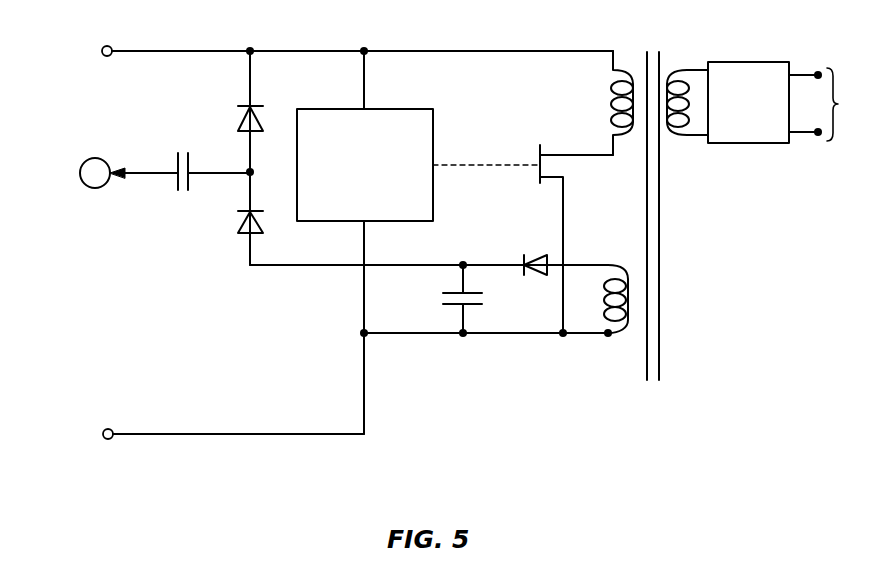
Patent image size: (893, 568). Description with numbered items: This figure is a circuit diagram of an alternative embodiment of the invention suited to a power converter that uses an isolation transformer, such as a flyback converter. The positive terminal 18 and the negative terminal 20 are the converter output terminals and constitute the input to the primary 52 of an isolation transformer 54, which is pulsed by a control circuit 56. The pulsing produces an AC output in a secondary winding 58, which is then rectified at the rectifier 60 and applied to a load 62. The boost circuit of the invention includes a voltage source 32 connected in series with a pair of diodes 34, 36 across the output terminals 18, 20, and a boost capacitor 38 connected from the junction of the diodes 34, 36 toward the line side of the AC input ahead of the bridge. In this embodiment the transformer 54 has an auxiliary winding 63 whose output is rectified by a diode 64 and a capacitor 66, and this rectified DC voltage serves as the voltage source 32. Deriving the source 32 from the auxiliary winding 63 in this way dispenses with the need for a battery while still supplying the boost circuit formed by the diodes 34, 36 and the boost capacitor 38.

The positive terminal 18 is at (103, 46).
The negative terminal 20 is at (103, 432).
The voltage source 32 is at (357, 333).
The diode 34 is at (243, 238).
The diode 36 is at (242, 118).
The boost capacitor 38 is at (183, 150).
The primary 52 is at (607, 103).
The isolation transformer 54 is at (652, 50).
The control circuit 56 is at (378, 178).
The secondary winding 58 is at (684, 70).
The rectifier 60 is at (745, 62).
The load 62 is at (830, 104).
The auxiliary winding 63 is at (628, 290).
The diode 64 is at (530, 258).
The capacitor 66 is at (483, 304).